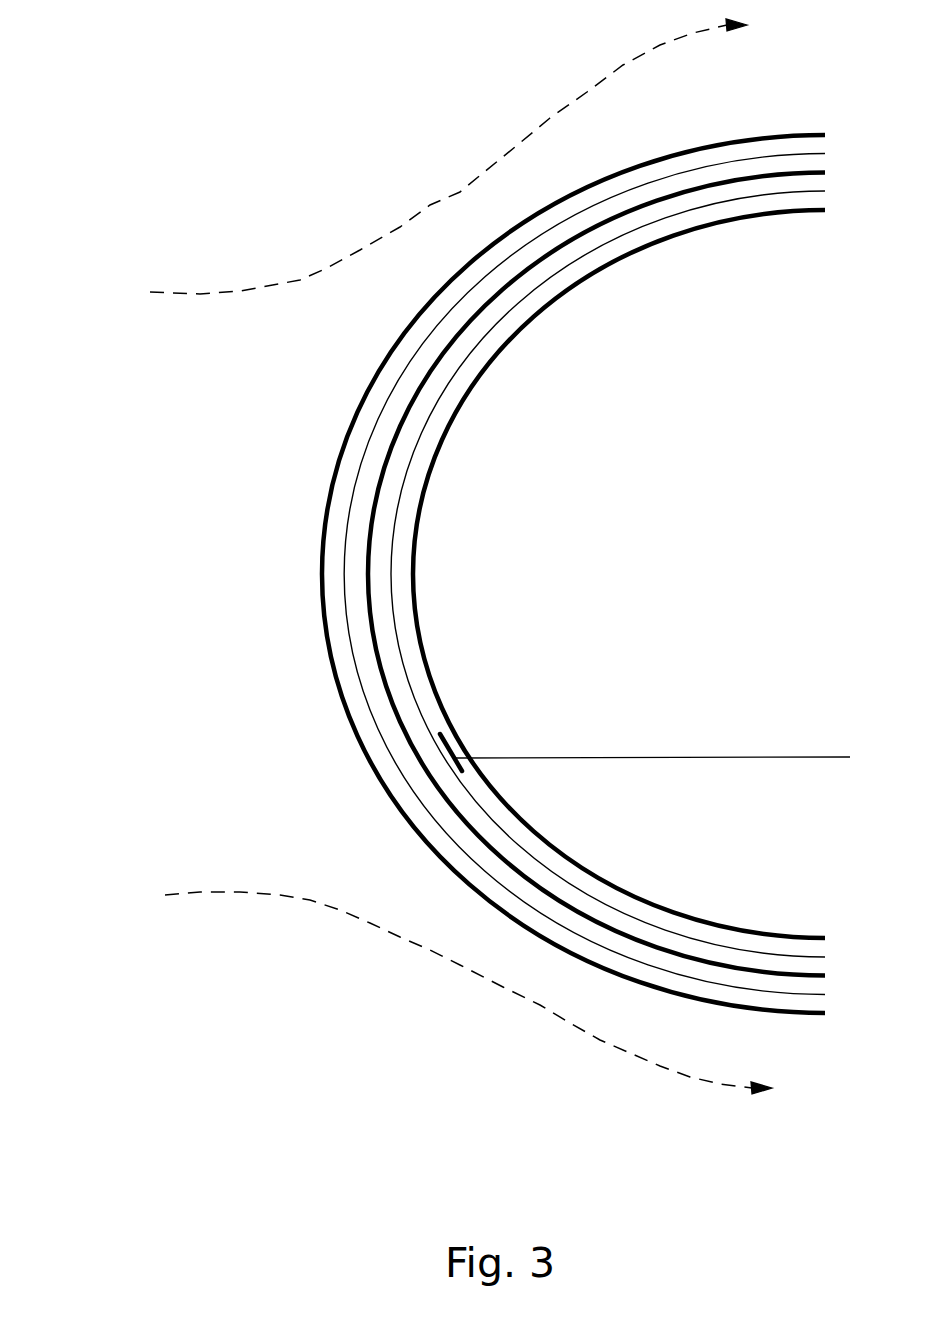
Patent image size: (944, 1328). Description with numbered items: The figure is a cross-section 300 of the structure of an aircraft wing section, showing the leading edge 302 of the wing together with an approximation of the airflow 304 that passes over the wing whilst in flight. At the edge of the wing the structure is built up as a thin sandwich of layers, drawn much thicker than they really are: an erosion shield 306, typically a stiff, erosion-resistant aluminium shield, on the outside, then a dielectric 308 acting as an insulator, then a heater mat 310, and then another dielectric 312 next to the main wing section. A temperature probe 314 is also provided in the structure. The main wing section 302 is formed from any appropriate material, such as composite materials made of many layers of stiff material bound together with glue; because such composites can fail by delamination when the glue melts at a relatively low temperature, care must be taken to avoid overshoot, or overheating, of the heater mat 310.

The cross-section 300 is at (269, 62).
The leading edge 302 is at (673, 576).
The airflow 304 is at (327, 268).
The erosion shield 306 is at (333, 461).
The dielectric 308 is at (350, 522).
The heater mat 310 is at (365, 583).
The dielectric 312 is at (398, 659).
The temperature probe 314 is at (442, 737).